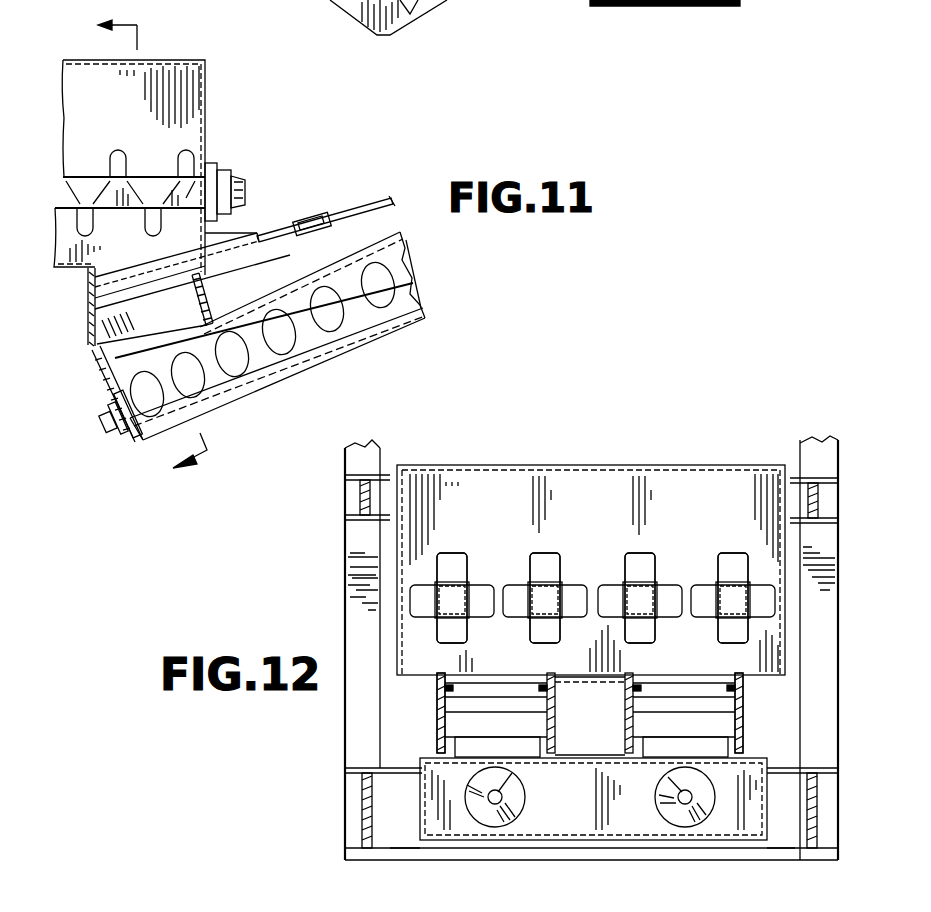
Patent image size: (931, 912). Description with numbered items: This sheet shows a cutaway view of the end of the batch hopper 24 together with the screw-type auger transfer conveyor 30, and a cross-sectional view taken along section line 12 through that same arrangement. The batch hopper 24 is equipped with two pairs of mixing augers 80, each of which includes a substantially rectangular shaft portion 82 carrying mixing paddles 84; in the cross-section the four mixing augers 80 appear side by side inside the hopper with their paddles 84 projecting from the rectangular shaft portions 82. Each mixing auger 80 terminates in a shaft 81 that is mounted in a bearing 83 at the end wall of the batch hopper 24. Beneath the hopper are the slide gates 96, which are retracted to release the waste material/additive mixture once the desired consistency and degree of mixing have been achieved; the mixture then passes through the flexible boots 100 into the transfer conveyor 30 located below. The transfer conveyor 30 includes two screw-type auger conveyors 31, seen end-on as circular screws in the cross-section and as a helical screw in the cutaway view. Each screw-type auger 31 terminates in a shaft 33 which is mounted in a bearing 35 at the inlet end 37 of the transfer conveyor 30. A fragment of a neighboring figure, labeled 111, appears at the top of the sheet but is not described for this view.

In FIG. 11, the section line 12 is at (173, 242).
In FIG. 11, the batch hopper 24 is at (205, 86).
In FIG. 12, the batch hopper 24 is at (605, 463).
In FIG. 11, the transfer conveyor 30 is at (383, 334).
In FIG. 12, the transfer conveyor 30 is at (420, 805).
In FIG. 11, the screw-type auger conveyor 31 is at (315, 364).
In FIG. 12, the screw-type auger conveyor 31 is at (526, 806).
In FIG. 11, the shaft 33 is at (100, 421).
In FIG. 11, the bearing 35 is at (117, 435).
In FIG. 11, the inlet end 37 is at (130, 440).
In FIG. 11, the mixing auger 80 is at (85, 162).
In FIG. 12, the mixing auger 80 is at (485, 567).
In FIG. 11, the shaft 81 is at (246, 186).
In FIG. 11, the rectangular shaft portion 82 is at (158, 174).
In FIG. 12, the rectangular shaft portion 82 is at (750, 576).
In FIG. 11, the bearing 83 is at (232, 166).
In FIG. 11, the mixing paddles 84 is at (118, 152).
In FIG. 12, the mixing paddles 84 is at (557, 560).
In FIG. 11, the slide gate 96 is at (263, 233).
In FIG. 12, the slide gate 96 is at (625, 690).
In FIG. 11, the flexible boot 100 is at (204, 293).
In FIG. 12, the flexible boot 100 is at (440, 743).
In FIG. 11, the guide member 111 is at (460, 0).